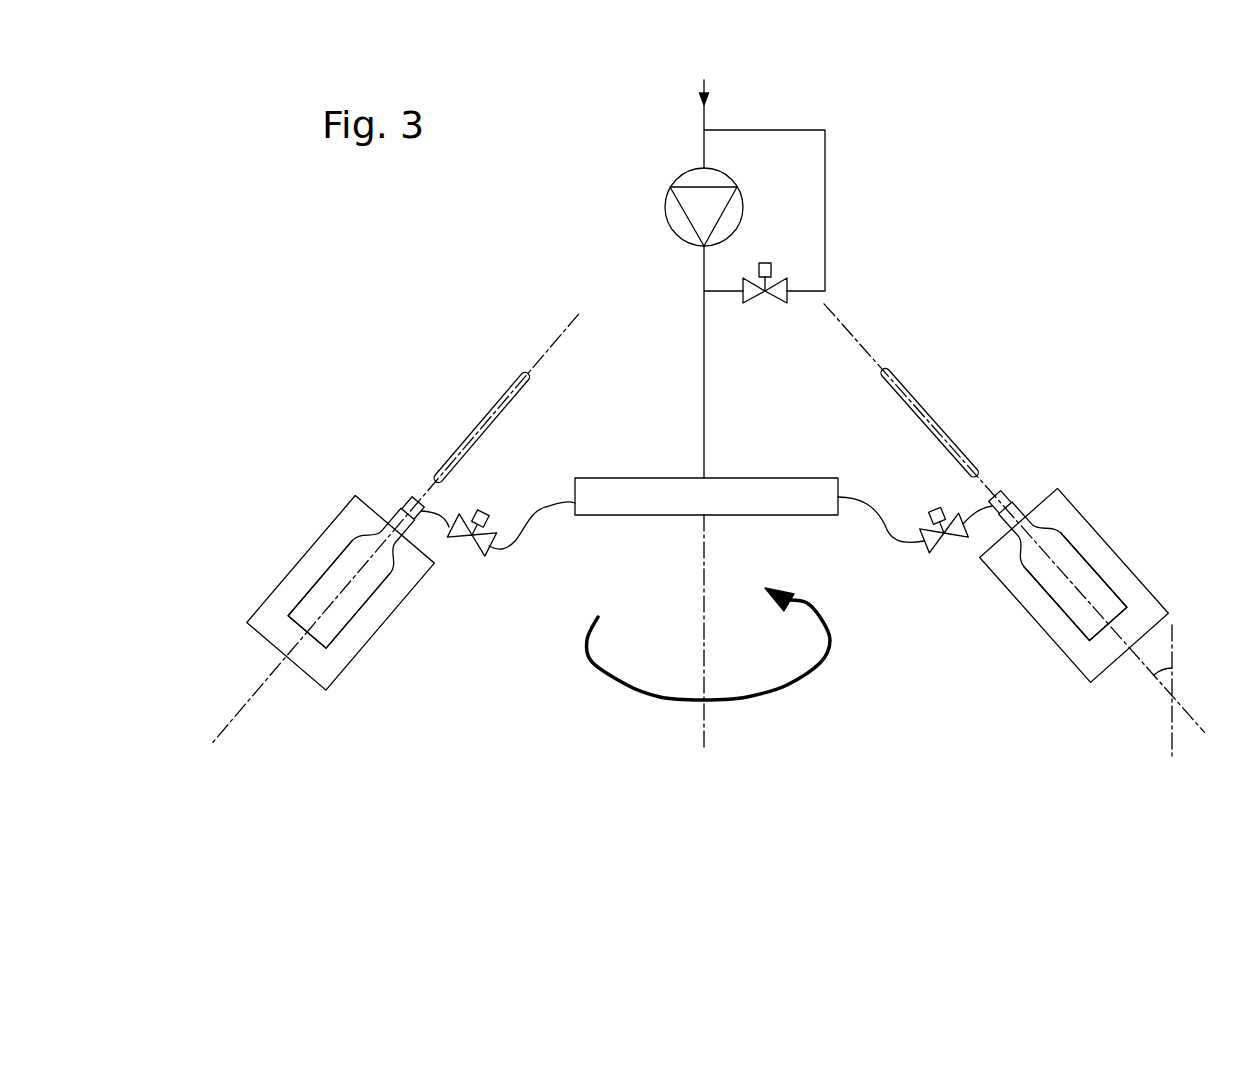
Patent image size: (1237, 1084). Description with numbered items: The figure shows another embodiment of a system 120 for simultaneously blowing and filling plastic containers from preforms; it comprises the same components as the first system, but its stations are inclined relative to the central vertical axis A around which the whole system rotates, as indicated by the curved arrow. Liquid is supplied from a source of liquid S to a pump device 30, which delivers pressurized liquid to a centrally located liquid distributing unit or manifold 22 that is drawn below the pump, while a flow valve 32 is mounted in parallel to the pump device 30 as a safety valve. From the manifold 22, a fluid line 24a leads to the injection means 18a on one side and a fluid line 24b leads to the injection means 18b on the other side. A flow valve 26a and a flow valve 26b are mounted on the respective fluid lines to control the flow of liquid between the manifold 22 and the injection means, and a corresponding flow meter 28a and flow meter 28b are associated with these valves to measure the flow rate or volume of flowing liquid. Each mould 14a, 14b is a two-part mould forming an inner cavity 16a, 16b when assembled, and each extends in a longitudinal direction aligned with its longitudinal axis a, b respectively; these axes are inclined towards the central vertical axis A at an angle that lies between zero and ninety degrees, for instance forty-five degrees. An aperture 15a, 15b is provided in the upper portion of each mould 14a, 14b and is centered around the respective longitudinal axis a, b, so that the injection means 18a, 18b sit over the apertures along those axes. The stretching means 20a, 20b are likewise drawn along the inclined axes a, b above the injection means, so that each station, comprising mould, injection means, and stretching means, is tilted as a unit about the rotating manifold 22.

The system 120 is at (950, 128).
The source of liquid S is at (703, 75).
The pump device 30 is at (642, 204).
The flow valve 32 is at (766, 322).
The liquid distributing unit or manifold 22 is at (822, 466).
The central vertical axis A is at (708, 553).
The longitudinal axis a is at (846, 327).
The longitudinal axis b is at (576, 321).
The mould 14a is at (1048, 615).
The mould 14b is at (368, 621).
The aperture 15a is at (1035, 524).
The aperture 15b is at (386, 531).
The inner cavity 16a is at (1076, 562).
The inner cavity 16b is at (340, 570).
The injection means 18a is at (1020, 485).
The injection means 18b is at (400, 490).
The stretching means 20a is at (950, 435).
The stretching means 20b is at (463, 442).
The fluid line 24a is at (888, 550).
The fluid line 24b is at (570, 512).
The flow valve 26a is at (936, 558).
The flow valve 26b is at (480, 562).
The flow meter 28a is at (935, 510).
The flow meter 28b is at (481, 510).